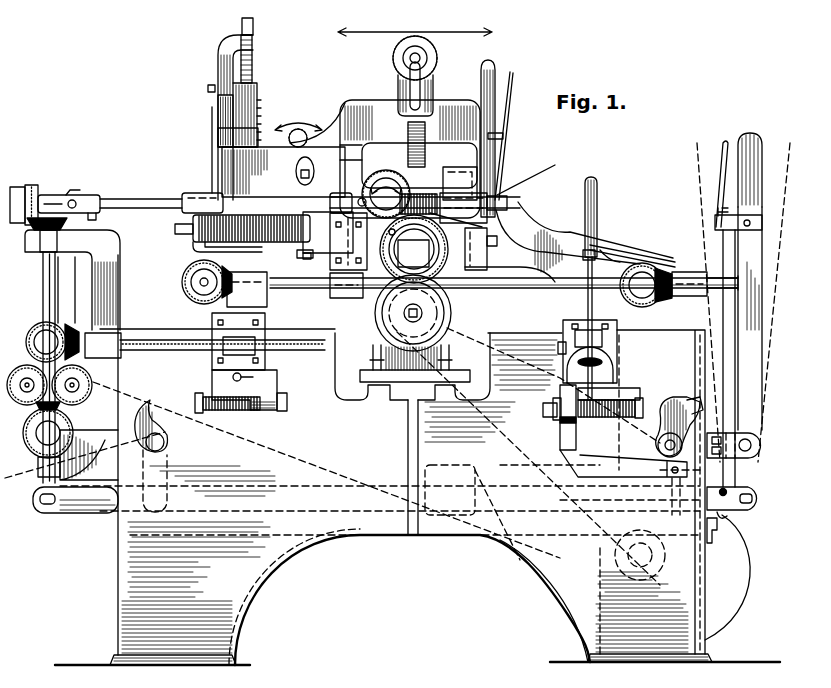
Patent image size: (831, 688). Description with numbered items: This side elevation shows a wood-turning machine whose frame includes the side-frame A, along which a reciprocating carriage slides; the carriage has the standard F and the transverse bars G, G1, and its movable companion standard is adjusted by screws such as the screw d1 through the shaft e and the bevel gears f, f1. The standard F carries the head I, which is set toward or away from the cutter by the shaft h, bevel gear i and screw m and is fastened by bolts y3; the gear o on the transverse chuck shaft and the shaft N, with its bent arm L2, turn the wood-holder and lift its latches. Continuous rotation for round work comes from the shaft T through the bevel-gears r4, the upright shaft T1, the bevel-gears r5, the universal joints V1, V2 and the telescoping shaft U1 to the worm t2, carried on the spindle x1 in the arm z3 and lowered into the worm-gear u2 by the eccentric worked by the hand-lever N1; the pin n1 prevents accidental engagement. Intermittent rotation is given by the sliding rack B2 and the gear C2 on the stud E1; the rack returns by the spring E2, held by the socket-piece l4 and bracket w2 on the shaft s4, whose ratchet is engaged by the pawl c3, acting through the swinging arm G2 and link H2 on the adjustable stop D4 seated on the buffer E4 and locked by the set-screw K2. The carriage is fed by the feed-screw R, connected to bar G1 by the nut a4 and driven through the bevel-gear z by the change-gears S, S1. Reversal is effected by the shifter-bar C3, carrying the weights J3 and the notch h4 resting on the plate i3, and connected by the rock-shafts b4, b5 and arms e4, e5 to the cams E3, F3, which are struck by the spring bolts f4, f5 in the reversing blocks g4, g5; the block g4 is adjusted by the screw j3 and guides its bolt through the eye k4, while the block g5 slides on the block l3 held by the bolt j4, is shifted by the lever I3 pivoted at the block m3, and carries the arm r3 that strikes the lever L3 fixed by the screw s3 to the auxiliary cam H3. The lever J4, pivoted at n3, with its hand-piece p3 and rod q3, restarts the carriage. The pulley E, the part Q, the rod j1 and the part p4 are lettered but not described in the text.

The side-frame A is at (417, 460).
The driving pulley E is at (378, 305).
The shaft e is at (419, 303).
The head I is at (431, 248).
The worm-gear u2 is at (380, 240).
The adjustable weight J3 is at (512, 501).
The bevel-gears r5 is at (38, 197).
The universal joint V1 is at (90, 195).
The telescoping shaft U1 is at (158, 198).
The set-screw K2 is at (212, 85).
The adjusting screw p4 is at (252, 64).
The adjustable stop D4 is at (218, 110).
The sliding rack B2 is at (253, 112).
The buffer E4 is at (224, 138).
The link H2 is at (212, 151).
The stud E1 is at (296, 170).
The gear C2 is at (300, 128).
The standard F is at (410, 159).
The bevel i is at (393, 58).
The shaft h is at (420, 60).
The screw m is at (410, 155).
The gear o is at (386, 186).
The arm z3 is at (449, 172).
The worm t2 is at (456, 197).
The universal joint V2 is at (352, 200).
The hand-lever N1 is at (490, 80).
The rod j1 is at (506, 106).
The pin n1 is at (500, 190).
The transverse shaft N is at (500, 207).
The spindle x1 is at (540, 173).
The bent arm L2 is at (510, 253).
The bolts y3 is at (497, 241).
The lever I3 is at (597, 184).
The lever Q is at (620, 262).
The bevel gear f is at (663, 292).
The rod q3 is at (718, 298).
The transverse bar G is at (562, 319).
The block m3 is at (600, 333).
The bolt j4 is at (596, 361).
The adjustable block l3 is at (568, 360).
The reversing block g5 is at (612, 392).
The spring bolt f5 is at (601, 417).
The arm r3 is at (560, 432).
The lever L3 is at (608, 440).
The cam F3 is at (677, 407).
The rock-shaft b5 is at (664, 446).
The auxiliary cam H3 is at (700, 409).
The pivot n3 is at (752, 446).
The lever J4 is at (762, 253).
The hand-piece p3 is at (725, 151).
The screw s3 is at (665, 476).
The arm e5 is at (679, 505).
The plate i3 is at (715, 539).
The notch h4 is at (728, 520).
The upright shaft T1 is at (44, 296).
The change-gear S is at (30, 346).
The bevel-gear z is at (72, 330).
The feed-screw R is at (171, 340).
The transverse bar G1 is at (212, 323).
The bevel gear f1 is at (192, 276).
The screw d1 is at (202, 283).
The swinging arm G2 is at (193, 226).
The shaft s4 is at (177, 231).
The bracket w2 is at (195, 248).
The spring E2 is at (290, 259).
The socket-piece l4 is at (347, 241).
The pawl c3 is at (301, 258).
The nut a4 is at (330, 287).
The screw j3 is at (233, 377).
The reversing block g4 is at (270, 382).
The spring bolt f4 is at (232, 411).
The eye k4 is at (277, 415).
The cam E3 is at (157, 412).
The rock-shaft b4 is at (163, 441).
The arm e4 is at (162, 463).
The change-gear S1 is at (62, 422).
The bevel-gears r4 is at (64, 396).
The shaft T is at (39, 462).
The shifter-bar C3 is at (75, 514).